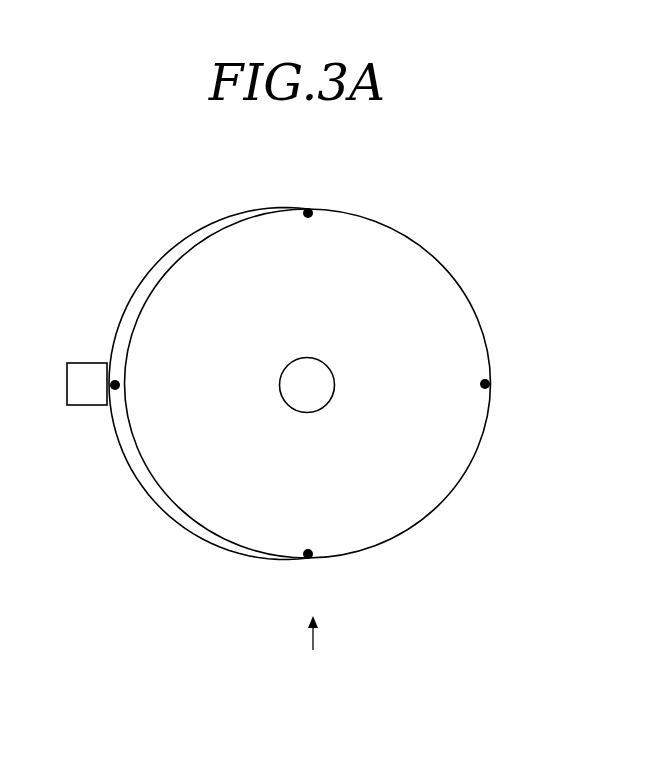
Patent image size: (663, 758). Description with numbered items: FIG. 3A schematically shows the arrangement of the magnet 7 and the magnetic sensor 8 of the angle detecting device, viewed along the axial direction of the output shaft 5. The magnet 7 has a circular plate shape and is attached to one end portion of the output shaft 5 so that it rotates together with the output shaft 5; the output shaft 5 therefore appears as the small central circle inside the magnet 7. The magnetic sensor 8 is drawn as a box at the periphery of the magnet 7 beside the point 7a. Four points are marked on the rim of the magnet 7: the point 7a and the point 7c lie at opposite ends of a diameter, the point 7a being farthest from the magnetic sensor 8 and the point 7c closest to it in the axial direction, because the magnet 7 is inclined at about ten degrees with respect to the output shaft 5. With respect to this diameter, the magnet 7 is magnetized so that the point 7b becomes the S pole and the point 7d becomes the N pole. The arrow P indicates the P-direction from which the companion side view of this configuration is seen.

The output shaft 5 is at (313, 367).
The magnet 7 is at (470, 328).
The point 7a is at (115, 391).
The point 7b is at (305, 209).
The point 7c is at (491, 383).
The point 7d is at (310, 560).
The magnetic sensor 8 is at (84, 372).
The P-direction P is at (311, 645).